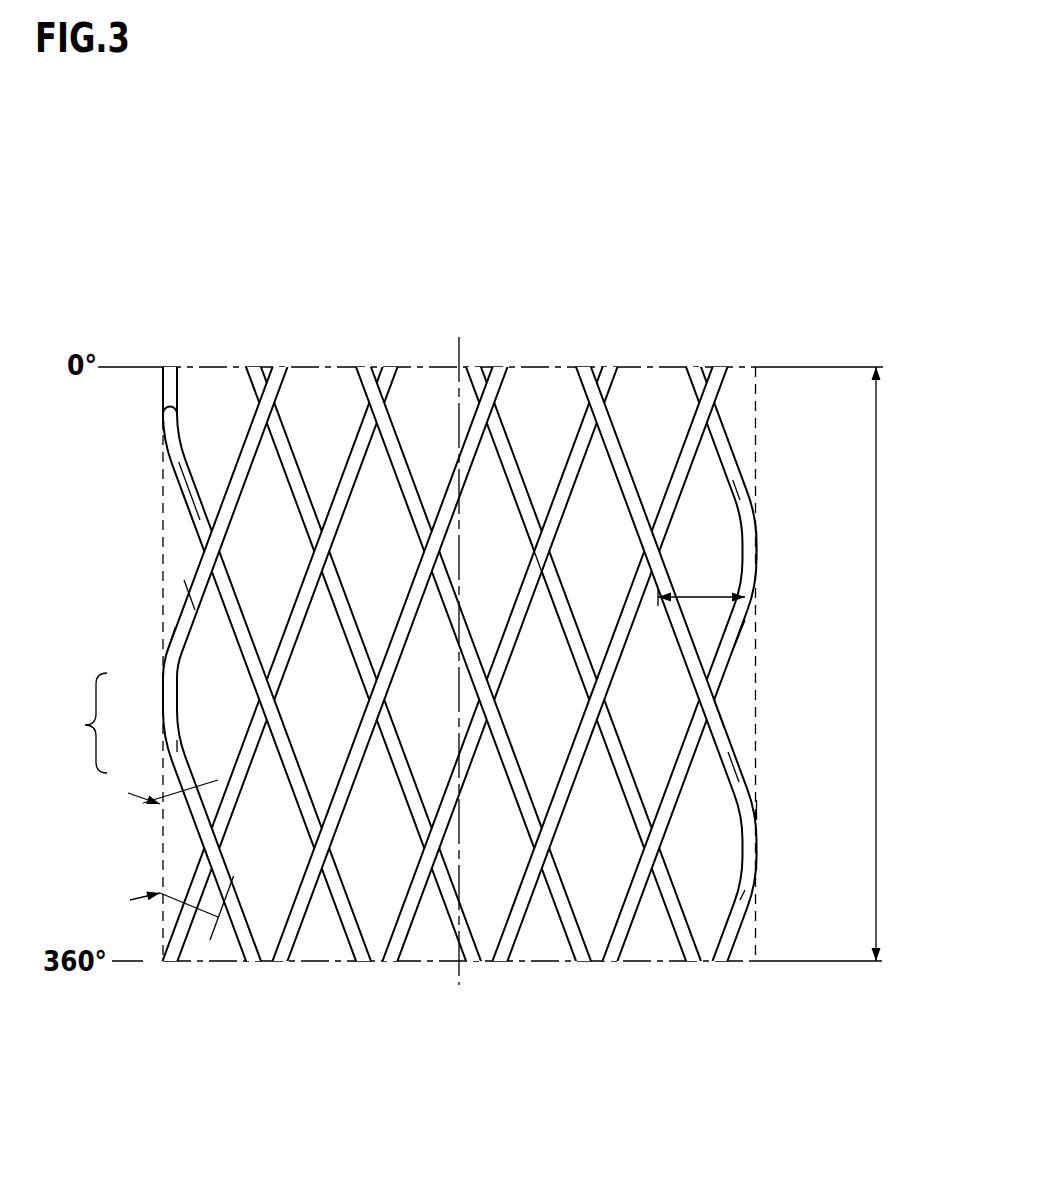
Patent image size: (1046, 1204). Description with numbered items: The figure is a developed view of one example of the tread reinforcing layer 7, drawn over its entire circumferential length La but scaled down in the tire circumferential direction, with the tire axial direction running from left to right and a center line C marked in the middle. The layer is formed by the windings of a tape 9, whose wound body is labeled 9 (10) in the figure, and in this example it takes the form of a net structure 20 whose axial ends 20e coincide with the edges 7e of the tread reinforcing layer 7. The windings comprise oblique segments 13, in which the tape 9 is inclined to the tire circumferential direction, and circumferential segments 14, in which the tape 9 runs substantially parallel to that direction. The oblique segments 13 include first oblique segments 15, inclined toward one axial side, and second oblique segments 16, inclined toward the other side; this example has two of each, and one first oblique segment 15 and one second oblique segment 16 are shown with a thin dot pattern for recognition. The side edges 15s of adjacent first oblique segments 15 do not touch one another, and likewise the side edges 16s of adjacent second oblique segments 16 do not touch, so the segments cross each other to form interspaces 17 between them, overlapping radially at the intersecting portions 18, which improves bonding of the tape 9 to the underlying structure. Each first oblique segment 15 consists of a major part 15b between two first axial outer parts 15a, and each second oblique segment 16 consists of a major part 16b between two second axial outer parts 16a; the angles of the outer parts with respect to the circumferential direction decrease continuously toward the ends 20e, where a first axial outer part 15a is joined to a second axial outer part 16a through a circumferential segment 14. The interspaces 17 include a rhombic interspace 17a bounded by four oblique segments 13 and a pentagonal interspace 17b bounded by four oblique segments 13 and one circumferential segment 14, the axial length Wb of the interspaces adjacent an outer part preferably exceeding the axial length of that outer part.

The tread reinforcing layer 7 is at (705, 282).
The net structure 20 is at (445, 615).
The edges of the tread reinforcing layer 7e is at (163, 407).
The ends of the net structure 20e is at (757, 380).
The tape 9 is at (425, 651).
The belt 10 is at (425, 651).
The oblique segments 13 is at (177, 760).
The circumferential segments 14 is at (167, 693).
The first oblique segments 15 is at (400, 452).
The first axial outer part 15a is at (165, 655).
The major part of the first oblique segment 15b is at (193, 607).
The side edges of the first oblique segments 15s is at (240, 440).
The second oblique segments 16 is at (457, 664).
The second axial outer part 16a is at (168, 437).
The major part of the second oblique segment 16b is at (187, 493).
The side edges of the second oblique segments 16s is at (235, 892).
The interspaces 17 is at (570, 433).
The rhombic interspace 17a is at (470, 548).
The pentagonal interspace 17b is at (707, 493).
The intersecting portions 18 is at (720, 700).
The length in the tire axial direction of the adjacent interspaces Wb is at (742, 617).
The circumferential length La is at (894, 664).
The center line C is at (460, 645).